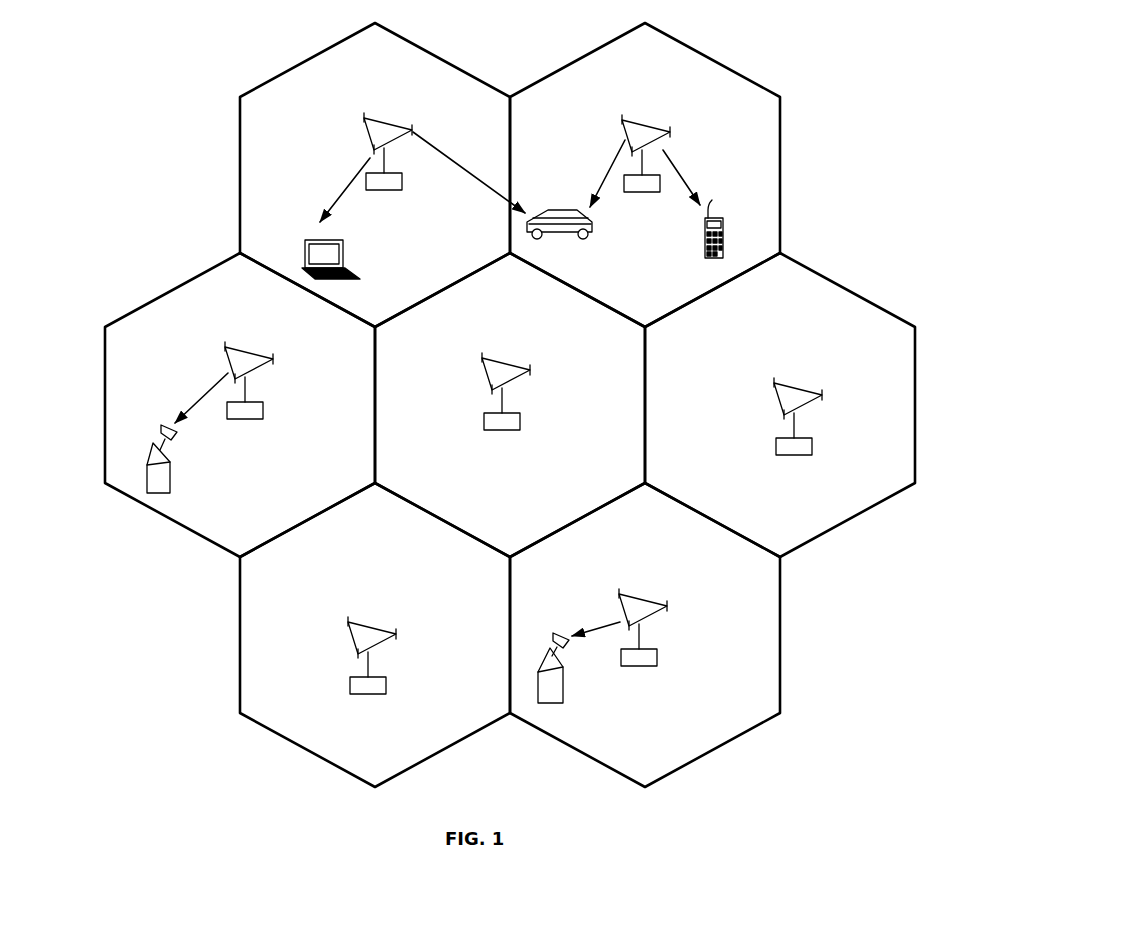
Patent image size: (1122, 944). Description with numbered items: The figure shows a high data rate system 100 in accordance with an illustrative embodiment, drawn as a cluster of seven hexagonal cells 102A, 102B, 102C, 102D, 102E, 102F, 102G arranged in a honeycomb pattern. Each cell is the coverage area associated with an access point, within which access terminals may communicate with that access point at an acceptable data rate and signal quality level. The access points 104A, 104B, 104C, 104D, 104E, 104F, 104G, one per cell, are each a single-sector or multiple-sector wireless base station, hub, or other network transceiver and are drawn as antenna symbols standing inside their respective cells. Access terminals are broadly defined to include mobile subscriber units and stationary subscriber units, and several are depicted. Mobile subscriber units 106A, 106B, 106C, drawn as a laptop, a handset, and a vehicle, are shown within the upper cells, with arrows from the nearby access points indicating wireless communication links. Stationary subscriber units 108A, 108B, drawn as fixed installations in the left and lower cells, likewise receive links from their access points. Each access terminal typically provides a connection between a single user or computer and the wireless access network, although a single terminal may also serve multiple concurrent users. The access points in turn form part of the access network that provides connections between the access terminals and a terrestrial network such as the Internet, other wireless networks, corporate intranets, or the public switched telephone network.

The high data rate system 100 is at (1036, 80).
The cell 102A is at (318, 54).
The cell 102B is at (709, 56).
The cell 102C is at (163, 290).
The cell 102D is at (629, 487).
The cell 102E is at (917, 410).
The cell 102F is at (240, 641).
The cell 102G is at (781, 613).
The access point 104A is at (375, 120).
The access point 104B is at (630, 122).
The access point 104C is at (236, 350).
The access point 104D is at (490, 360).
The access point 104E is at (784, 391).
The access point 104F is at (349, 623).
The access point 104G is at (632, 605).
The mobile subscriber unit 106A is at (320, 240).
The mobile subscriber unit 106B is at (712, 216).
The mobile subscriber unit 106C is at (565, 208).
The stationary subscriber unit 108A is at (163, 429).
The stationary subscriber unit 108B is at (555, 638).